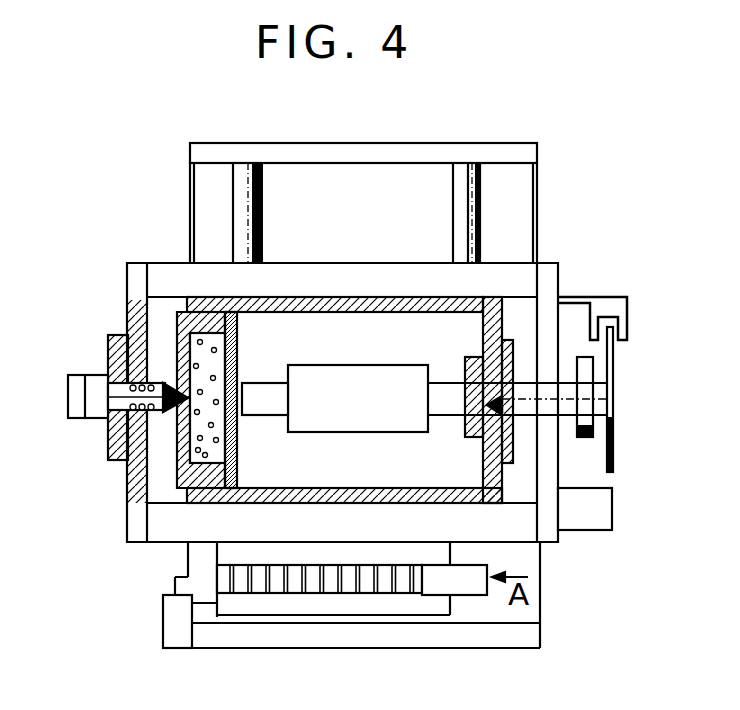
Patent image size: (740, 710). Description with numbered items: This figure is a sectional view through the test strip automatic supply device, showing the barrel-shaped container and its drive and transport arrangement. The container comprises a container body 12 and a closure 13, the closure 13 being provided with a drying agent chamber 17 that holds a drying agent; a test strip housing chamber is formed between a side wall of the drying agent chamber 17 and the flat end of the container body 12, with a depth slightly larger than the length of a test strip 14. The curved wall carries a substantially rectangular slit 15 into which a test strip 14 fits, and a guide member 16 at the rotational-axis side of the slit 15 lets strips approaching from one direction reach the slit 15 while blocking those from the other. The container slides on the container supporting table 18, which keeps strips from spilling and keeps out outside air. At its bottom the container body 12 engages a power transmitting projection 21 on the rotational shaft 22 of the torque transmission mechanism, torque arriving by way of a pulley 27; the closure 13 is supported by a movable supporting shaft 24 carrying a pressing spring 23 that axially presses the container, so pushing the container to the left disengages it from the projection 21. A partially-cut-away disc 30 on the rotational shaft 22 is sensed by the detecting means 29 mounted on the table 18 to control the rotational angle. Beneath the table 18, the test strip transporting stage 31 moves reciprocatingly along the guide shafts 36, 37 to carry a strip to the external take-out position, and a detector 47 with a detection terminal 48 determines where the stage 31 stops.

The container body 12 is at (372, 297).
The closure 13 is at (187, 303).
The test strip 14 is at (305, 595).
The slit 15 is at (258, 383).
The guide member 16 is at (362, 372).
The drying agent chamber 17 is at (187, 342).
The container supporting table 18 is at (502, 270).
The power transmitting projection 21 is at (487, 340).
The rotational shaft 22 is at (520, 416).
The pressing spring 23 is at (110, 433).
The supporting shaft 24 is at (102, 373).
The pulley 27 is at (593, 432).
The partially-cut-away disc detecting means 29 is at (627, 310).
The partially-cut-away disc 30 is at (612, 383).
The test strip transporting stage 31 is at (422, 605).
The guide shaft 36 is at (243, 168).
The guide shaft 37 is at (466, 170).
The detector 47 is at (170, 625).
The detection terminal 48 is at (175, 583).